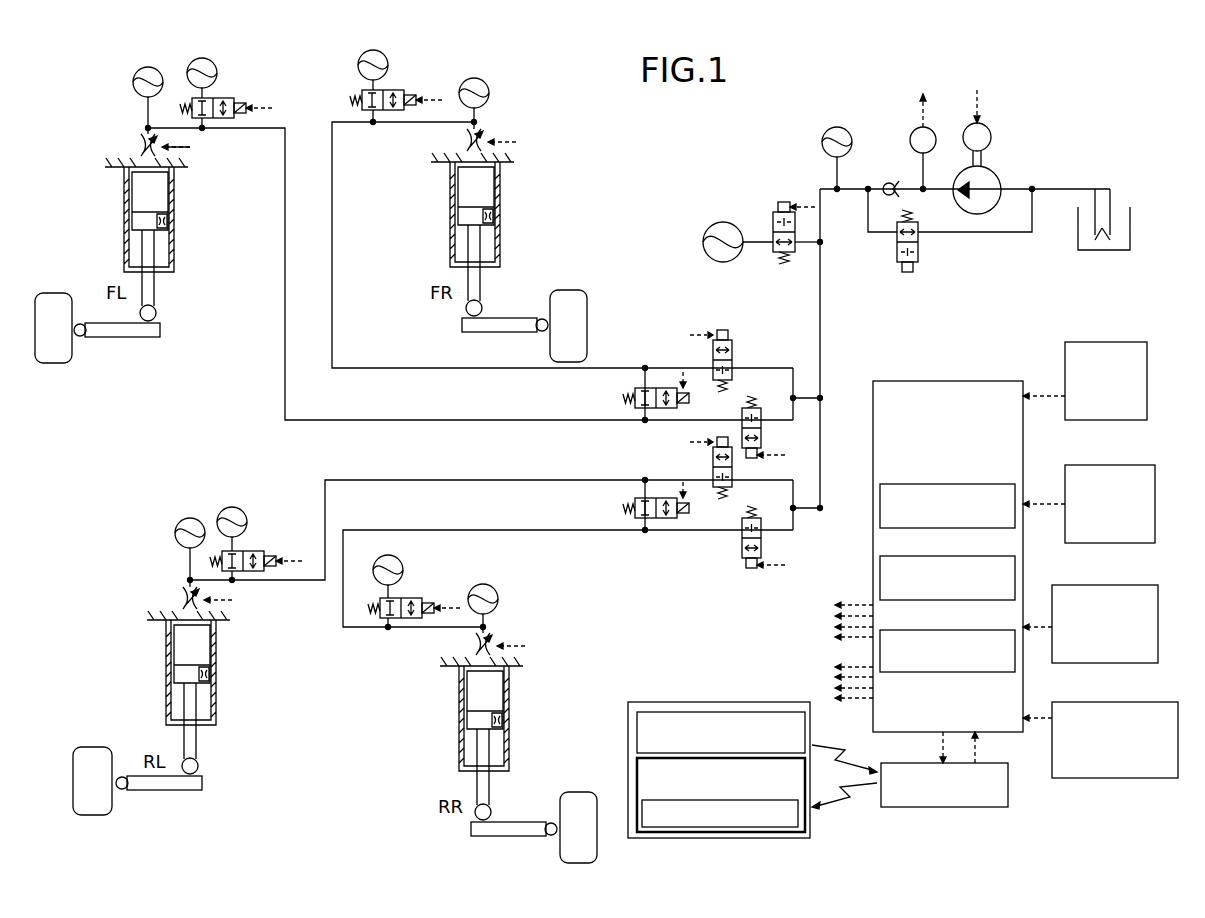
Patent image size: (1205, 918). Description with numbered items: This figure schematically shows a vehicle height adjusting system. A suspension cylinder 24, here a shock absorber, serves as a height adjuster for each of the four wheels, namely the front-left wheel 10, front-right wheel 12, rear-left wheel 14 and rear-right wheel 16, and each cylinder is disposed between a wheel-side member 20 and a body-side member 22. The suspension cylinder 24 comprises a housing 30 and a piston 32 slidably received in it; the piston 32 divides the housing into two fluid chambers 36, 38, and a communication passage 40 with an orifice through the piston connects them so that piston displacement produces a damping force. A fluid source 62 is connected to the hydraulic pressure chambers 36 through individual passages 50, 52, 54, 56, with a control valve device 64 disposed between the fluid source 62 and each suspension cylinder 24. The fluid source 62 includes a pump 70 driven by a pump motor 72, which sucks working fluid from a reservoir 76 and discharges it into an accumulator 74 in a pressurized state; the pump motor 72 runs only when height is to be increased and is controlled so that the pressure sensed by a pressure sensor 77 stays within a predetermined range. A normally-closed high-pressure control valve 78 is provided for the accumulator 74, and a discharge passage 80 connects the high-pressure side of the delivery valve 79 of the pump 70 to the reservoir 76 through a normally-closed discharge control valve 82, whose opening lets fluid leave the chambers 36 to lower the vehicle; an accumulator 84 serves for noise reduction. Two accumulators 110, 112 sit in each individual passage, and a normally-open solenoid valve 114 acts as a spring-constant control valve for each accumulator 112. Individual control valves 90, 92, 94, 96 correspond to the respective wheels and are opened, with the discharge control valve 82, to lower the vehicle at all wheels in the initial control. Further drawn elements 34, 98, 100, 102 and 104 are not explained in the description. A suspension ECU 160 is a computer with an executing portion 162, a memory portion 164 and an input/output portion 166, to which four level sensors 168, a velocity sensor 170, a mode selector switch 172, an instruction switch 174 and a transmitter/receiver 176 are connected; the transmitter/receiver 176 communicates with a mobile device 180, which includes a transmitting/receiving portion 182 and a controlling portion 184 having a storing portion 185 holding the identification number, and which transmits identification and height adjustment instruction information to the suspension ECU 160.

The front-left wheel 10 is at (55, 301).
The front-right wheel 12 is at (569, 300).
The rear-left wheel 14 is at (93, 758).
The rear-right wheel 16 is at (578, 798).
The wheel-side member 20 is at (136, 338).
The body-side member 22 is at (180, 160).
The suspension cylinder 24 is at (119, 208).
The housing 30 is at (175, 177).
The piston 32 is at (140, 223).
The piston rod 34 is at (482, 287).
The fluid chamber 36 is at (132, 164).
The fluid chamber 38 is at (136, 250).
The communication passage 40 is at (170, 214).
The individual passage 50 is at (288, 212).
The individual passage 52 is at (396, 368).
The individual passage 54 is at (319, 594).
The individual passage 56 is at (346, 632).
The fluid source 62 is at (952, 95).
The control valve device 64 is at (694, 575).
The pump 70 is at (996, 176).
The pump motor 72 is at (990, 138).
The accumulator 74 is at (709, 226).
The reservoir 76 is at (1118, 197).
The pressure sensor 77 is at (910, 140).
The high-pressure control valve 78 is at (772, 216).
The delivery valve 79 is at (884, 184).
The discharge passage 80 is at (970, 234).
The discharge control valve 82 is at (918, 262).
The accumulator for noise reduction 84 is at (826, 136).
The individual control valve 90 is at (760, 448).
The individual control valve 92 is at (734, 351).
The individual control valve 94 is at (710, 472).
The individual control valve 96 is at (760, 556).
The front cutoff valve 98 is at (634, 394).
The rear cutoff valve 100 is at (632, 504).
The solenoid of front cutoff valve 102 is at (654, 410).
The solenoid of rear cutoff valve 104 is at (656, 520).
The accumulator 110 is at (136, 88).
The accumulator 112 is at (218, 65).
The solenoid valve 114 is at (220, 94).
The suspension ECU 160 is at (934, 382).
The executing portion 162 is at (1002, 529).
The memory portion 164 is at (1002, 602).
The input/output portion 166 is at (1002, 674).
The level sensors 168 is at (1140, 423).
The velocity sensor 170 is at (1142, 545).
The mode selector switch 172 is at (1145, 666).
The instruction switch 174 is at (1164, 782).
The transmitter/receiver 176 is at (996, 815).
The mobile device 180 is at (796, 708).
The transmitting/receiving portion 182 is at (637, 734).
The controlling portion 184 is at (637, 770).
The storing portion 185 is at (637, 820).